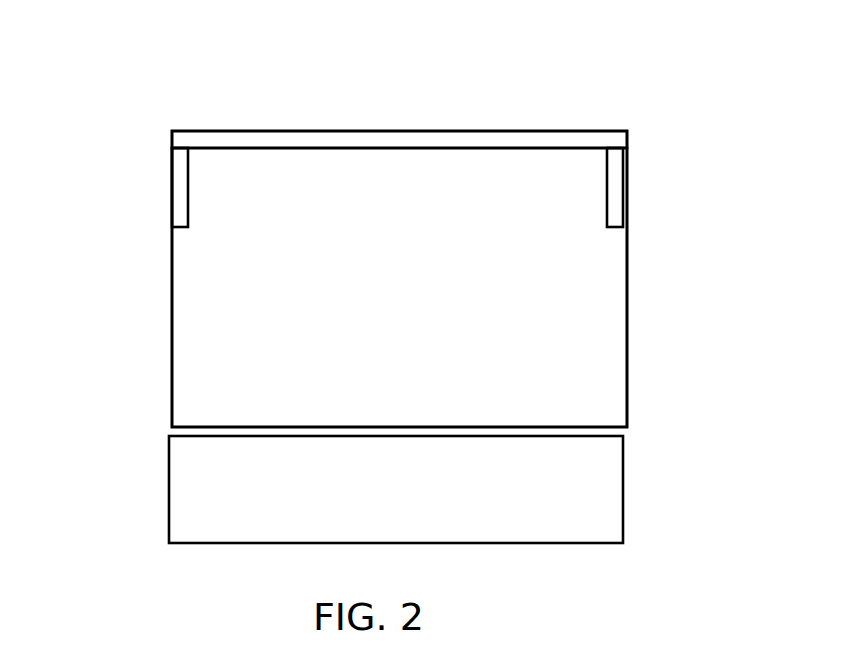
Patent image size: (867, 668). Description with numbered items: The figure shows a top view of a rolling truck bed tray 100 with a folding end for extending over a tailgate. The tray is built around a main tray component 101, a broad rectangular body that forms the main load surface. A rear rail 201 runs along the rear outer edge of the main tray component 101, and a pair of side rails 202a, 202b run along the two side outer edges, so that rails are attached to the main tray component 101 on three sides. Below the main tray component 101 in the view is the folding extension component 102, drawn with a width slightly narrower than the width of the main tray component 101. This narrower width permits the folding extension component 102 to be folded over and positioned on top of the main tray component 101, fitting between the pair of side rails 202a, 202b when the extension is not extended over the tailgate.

The wall structure 100 is at (138, 86).
The main tray component 101 is at (615, 303).
The folding extension component 102 is at (192, 534).
The rear rail 201 is at (545, 131).
The side rail 202a is at (185, 204).
The side rail 202b is at (613, 195).